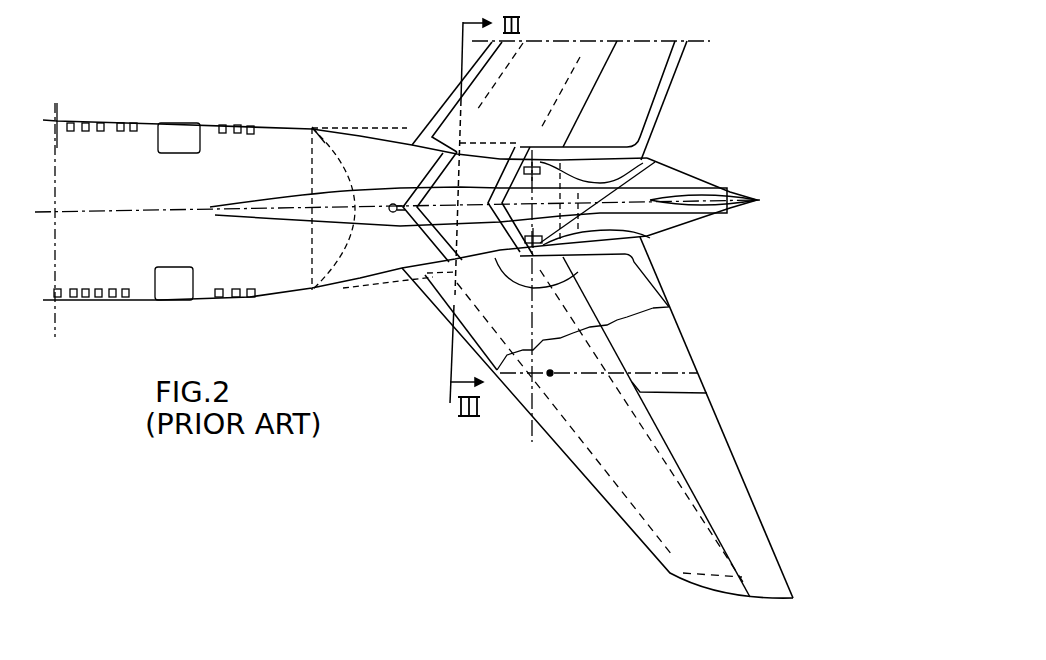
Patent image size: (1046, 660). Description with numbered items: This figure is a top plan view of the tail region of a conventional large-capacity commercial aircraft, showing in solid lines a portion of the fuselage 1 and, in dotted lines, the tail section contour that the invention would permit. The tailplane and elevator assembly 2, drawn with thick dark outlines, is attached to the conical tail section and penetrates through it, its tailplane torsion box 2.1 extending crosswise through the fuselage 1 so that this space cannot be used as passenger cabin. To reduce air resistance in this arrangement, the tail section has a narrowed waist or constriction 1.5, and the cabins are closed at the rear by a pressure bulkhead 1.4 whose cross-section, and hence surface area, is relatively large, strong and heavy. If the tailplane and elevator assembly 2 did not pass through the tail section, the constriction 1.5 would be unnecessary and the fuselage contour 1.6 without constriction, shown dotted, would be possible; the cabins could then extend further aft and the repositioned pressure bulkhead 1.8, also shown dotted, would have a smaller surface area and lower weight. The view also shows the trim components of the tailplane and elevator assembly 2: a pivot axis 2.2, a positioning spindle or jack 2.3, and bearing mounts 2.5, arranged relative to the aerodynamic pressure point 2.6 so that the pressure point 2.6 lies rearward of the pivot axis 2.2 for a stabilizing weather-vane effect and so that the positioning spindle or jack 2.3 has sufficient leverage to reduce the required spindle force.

The fuselage 1 is at (113, 262).
The pressure bulkhead 1.4 is at (338, 263).
The constriction 1.5 is at (552, 286).
The fuselage contour 1.6 is at (494, 125).
The repositioned pressure bulkhead 1.8 is at (640, 237).
The tailplane and elevator assembly 2 is at (683, 64).
The tailplane torsion box 2.1 is at (623, 452).
The pivot axis 2.2 is at (531, 429).
The positioning spindle or jack 2.3 is at (390, 216).
The bearing mounts 2.5 is at (614, 193).
The aerodynamic pressure point 2.6 is at (553, 372).